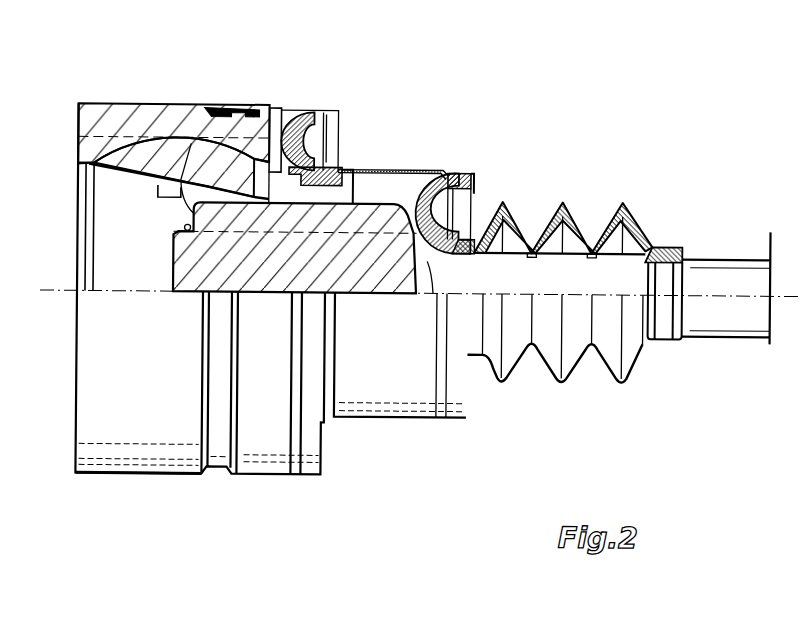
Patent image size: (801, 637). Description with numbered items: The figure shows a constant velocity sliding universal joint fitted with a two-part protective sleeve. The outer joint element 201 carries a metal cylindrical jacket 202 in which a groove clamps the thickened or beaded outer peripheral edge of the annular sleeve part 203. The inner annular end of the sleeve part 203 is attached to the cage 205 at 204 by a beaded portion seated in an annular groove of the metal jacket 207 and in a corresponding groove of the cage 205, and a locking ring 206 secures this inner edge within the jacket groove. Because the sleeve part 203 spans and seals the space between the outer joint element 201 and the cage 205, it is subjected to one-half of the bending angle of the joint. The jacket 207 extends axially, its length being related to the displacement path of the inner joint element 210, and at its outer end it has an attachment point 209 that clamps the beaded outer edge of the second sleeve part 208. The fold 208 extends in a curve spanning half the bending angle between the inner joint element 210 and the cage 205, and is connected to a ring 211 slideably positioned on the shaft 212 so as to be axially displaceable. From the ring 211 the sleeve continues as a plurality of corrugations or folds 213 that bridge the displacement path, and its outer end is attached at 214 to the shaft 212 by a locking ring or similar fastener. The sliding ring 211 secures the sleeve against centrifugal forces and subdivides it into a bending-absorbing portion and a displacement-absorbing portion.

The outer joint element 201 is at (92, 120).
The metal cylindrical jacket 202 is at (240, 110).
The annular sleeve part 203 is at (285, 110).
The attachment point of sleeve part to cage 204 is at (340, 167).
The cage 205 is at (127, 160).
The locking ring 206 is at (330, 150).
The metal jacket 207 is at (380, 166).
The second sleeve part 208 is at (430, 170).
The attachment point 209 is at (471, 170).
The inner joint element 210 is at (271, 158).
The ring 211 is at (481, 186).
The shaft 212 is at (607, 268).
The corrugations or folds 213 is at (622, 200).
The attachment of sleeve part to shaft 214 is at (666, 245).